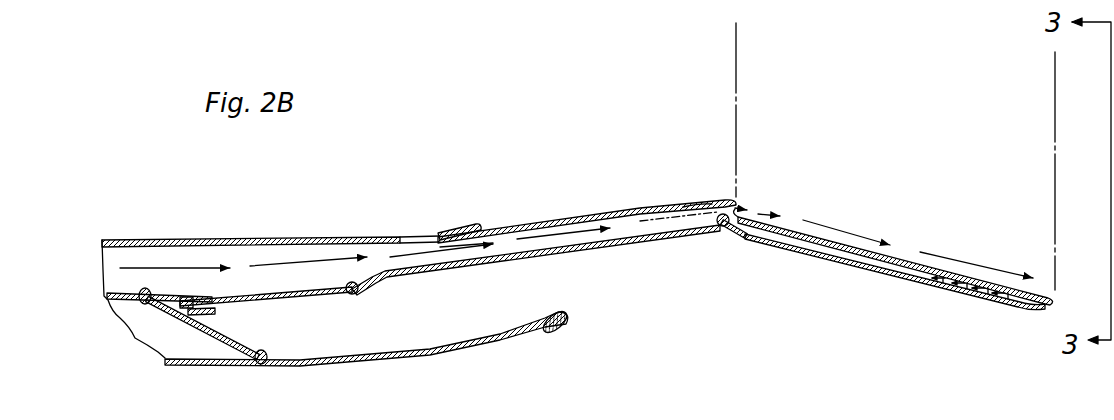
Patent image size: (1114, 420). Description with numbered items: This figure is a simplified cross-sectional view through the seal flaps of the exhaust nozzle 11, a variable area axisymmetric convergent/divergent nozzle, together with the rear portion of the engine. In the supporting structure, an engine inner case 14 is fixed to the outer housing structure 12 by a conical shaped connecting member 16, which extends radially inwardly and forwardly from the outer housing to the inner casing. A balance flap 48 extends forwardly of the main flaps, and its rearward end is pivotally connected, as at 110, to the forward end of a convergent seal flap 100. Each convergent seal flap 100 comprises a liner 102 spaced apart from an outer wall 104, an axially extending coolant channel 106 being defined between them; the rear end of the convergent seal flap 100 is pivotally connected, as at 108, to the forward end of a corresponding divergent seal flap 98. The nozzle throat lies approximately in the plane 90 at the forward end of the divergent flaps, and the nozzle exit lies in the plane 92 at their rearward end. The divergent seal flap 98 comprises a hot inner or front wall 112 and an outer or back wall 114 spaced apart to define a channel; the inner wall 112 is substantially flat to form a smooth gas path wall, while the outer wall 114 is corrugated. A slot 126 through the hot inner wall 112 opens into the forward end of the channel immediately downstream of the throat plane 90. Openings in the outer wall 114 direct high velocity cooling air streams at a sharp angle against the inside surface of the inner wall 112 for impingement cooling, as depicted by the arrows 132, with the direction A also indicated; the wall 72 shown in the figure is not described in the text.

The exhaust nozzle 11 is at (822, 213).
The outer housing structure 12 is at (428, 356).
The engine inner case 14 is at (110, 294).
The connecting member 16 is at (210, 317).
The balance flap 48 is at (260, 302).
The outer duct wall 72 is at (212, 237).
The nozzle throat plane 90 is at (736, 60).
The nozzle exit plane 92 is at (1053, 88).
The divergent seal flap 98 is at (795, 254).
The convergent seal flap 100 is at (592, 254).
The liner 102 is at (548, 222).
The outer wall 104 is at (617, 247).
The coolant channel 106 is at (683, 207).
The pivotal connection 108 is at (723, 230).
The pivotal connection 110 is at (356, 291).
The inner wall 112 is at (907, 257).
The outer wall 114 is at (843, 263).
The slot 126 is at (750, 217).
The arrows 132 is at (990, 300).
The flow direction A is at (882, 281).